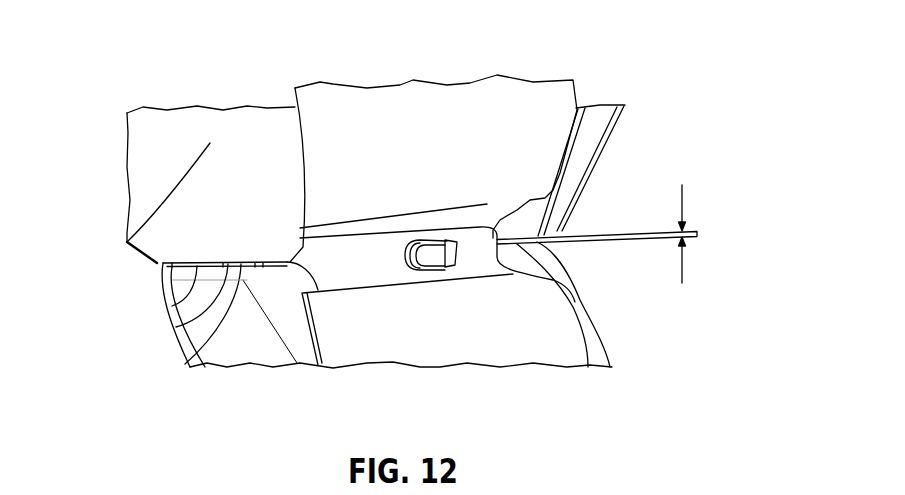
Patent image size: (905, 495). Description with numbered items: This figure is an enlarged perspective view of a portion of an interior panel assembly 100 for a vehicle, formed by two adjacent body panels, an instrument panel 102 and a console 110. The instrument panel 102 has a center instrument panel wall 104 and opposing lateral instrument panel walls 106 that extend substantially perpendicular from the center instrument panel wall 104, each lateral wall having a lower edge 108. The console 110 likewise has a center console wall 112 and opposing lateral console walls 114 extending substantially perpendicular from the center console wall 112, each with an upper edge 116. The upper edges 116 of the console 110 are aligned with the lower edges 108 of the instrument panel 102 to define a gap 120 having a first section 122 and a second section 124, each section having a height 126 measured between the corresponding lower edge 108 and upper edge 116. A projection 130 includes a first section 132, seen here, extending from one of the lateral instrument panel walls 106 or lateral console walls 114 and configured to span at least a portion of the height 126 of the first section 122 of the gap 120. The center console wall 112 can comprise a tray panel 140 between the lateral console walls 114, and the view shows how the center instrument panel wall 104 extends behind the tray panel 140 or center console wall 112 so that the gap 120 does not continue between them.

The interior panel assembly 100 is at (173, 75).
The instrument panel 102 is at (555, 70).
The center instrument panel wall 104 is at (402, 113).
The lateral instrument panel walls 106 is at (168, 152).
The lower edge 108 is at (190, 264).
The console 110 is at (571, 375).
The center console wall 112 is at (462, 343).
The lateral console walls 114 is at (248, 350).
The upper edge 116 is at (168, 302).
The gap 120 is at (148, 265).
The first section of the gap 122 is at (317, 282).
The second section of the gap 124 is at (565, 248).
The height 126 is at (686, 190).
The projection 130 is at (178, 327).
The first section of the projection 132 is at (187, 360).
The tray panel 140 is at (482, 258).